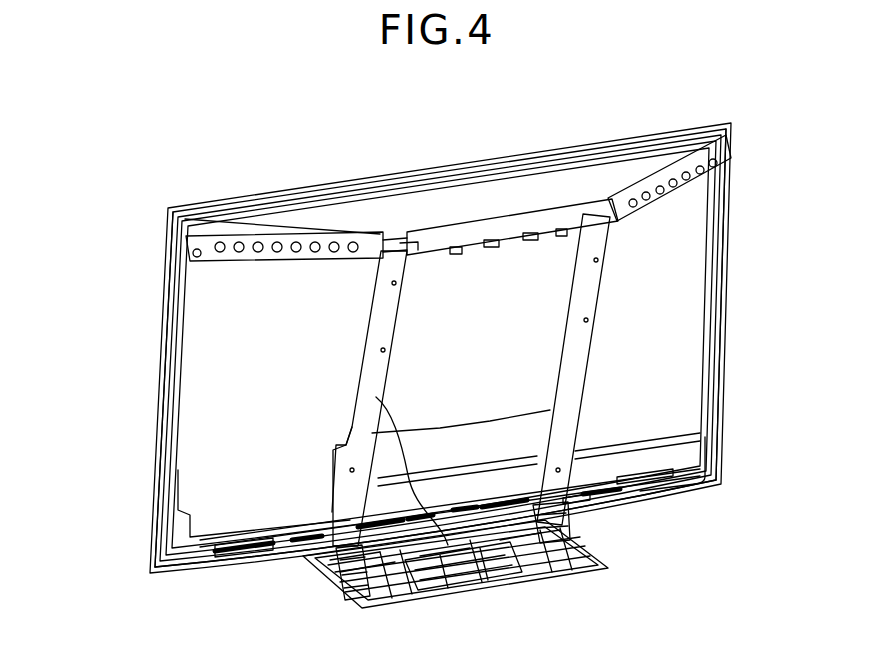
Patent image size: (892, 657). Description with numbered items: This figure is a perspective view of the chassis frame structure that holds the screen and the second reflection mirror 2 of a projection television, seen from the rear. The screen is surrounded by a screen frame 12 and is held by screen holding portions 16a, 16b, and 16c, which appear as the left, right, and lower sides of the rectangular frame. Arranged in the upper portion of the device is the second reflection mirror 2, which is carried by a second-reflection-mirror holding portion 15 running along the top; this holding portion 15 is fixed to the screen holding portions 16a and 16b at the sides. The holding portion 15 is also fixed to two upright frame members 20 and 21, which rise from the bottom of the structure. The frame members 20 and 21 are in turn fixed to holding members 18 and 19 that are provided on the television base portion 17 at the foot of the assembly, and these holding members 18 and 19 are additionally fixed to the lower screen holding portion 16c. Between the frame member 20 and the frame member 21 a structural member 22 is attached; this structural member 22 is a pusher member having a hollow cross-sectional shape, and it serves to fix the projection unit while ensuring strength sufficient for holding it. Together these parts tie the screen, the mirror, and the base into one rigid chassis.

The second reflection mirror 2 is at (528, 185).
The screen frame 12 is at (408, 180).
The second-reflection-mirror holding portion 15 is at (418, 244).
The screen holding portion 16a is at (160, 422).
The screen holding portion 16b is at (729, 264).
The screen holding portion 16c is at (297, 546).
The television base portion 17 is at (513, 578).
The holding member 18 is at (332, 593).
The holding member 19 is at (583, 527).
The frame member 20 is at (582, 376).
The frame member 21 is at (450, 556).
The structural member 22 is at (440, 428).